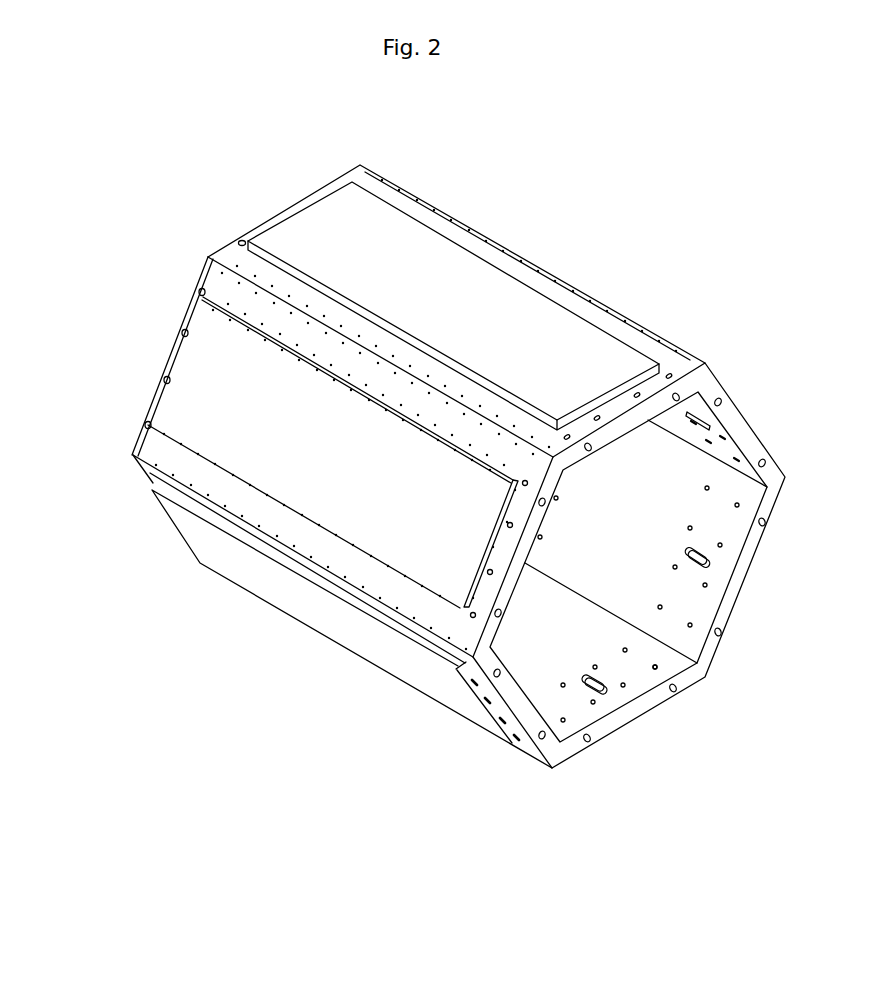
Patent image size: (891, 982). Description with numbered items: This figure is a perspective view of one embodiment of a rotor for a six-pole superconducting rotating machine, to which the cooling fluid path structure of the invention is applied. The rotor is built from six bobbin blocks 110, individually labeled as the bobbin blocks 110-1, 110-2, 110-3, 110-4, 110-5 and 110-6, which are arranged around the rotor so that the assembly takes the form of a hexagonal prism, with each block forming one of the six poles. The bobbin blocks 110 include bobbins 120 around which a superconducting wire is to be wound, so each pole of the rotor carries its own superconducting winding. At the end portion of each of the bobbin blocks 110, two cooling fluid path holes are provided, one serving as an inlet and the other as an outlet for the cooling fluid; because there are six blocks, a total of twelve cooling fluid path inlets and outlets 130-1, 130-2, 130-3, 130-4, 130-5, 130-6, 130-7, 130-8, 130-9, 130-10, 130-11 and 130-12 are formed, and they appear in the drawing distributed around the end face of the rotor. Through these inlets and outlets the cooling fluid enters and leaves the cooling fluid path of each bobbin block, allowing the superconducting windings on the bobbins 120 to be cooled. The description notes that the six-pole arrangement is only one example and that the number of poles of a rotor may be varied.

The bobbin blocks 110 is at (243, 293).
The bobbin block 110-1 is at (212, 276).
The bobbin block 110-2 is at (152, 480).
The bobbin block 110-3 is at (613, 700).
The bobbin block 110-4 is at (723, 568).
The bobbin block 110-5 is at (730, 448).
The bobbin block 110-6 is at (558, 290).
The bobbins 120 is at (193, 366).
The cooling fluid path inlet/outlet 130-1 is at (547, 505).
The cooling fluid path inlet/outlet 130-2 is at (503, 606).
The cooling fluid path inlet/outlet 130-3 is at (503, 688).
The cooling fluid path inlet/outlet 130-4 is at (543, 758).
The cooling fluid path inlet/outlet 130-5 is at (592, 742).
The cooling fluid path inlet/outlet 130-6 is at (680, 693).
The cooling fluid path inlet/outlet 130-7 is at (728, 633).
The cooling fluid path inlet/outlet 130-8 is at (772, 523).
The cooling fluid path inlet/outlet 130-9 is at (772, 465).
The cooling fluid path inlet/outlet 130-10 is at (725, 403).
The cooling fluid path inlet/outlet 130-11 is at (698, 390).
The cooling fluid path inlet/outlet 130-12 is at (605, 446).